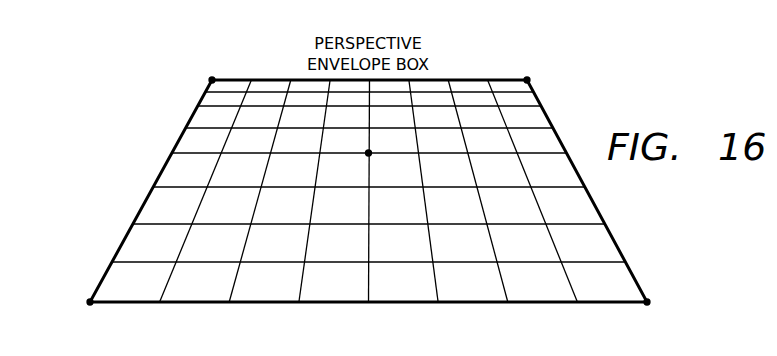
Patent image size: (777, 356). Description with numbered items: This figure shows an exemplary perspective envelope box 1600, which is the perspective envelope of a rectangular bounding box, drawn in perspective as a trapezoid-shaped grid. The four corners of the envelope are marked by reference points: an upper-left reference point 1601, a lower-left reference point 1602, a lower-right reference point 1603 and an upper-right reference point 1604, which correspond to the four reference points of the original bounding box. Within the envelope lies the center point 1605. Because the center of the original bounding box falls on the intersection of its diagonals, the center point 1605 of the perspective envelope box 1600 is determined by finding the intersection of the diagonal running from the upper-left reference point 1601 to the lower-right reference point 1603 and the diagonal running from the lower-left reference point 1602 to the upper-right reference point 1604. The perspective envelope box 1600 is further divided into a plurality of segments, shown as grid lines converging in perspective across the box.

The perspective envelope box 1600 is at (161, 173).
The reference point A* 1601 is at (211, 79).
The reference point B* 1602 is at (89, 304).
The reference point C* 1603 is at (648, 304).
The reference point D* 1604 is at (528, 79).
The center point O* 1605 is at (366, 152).